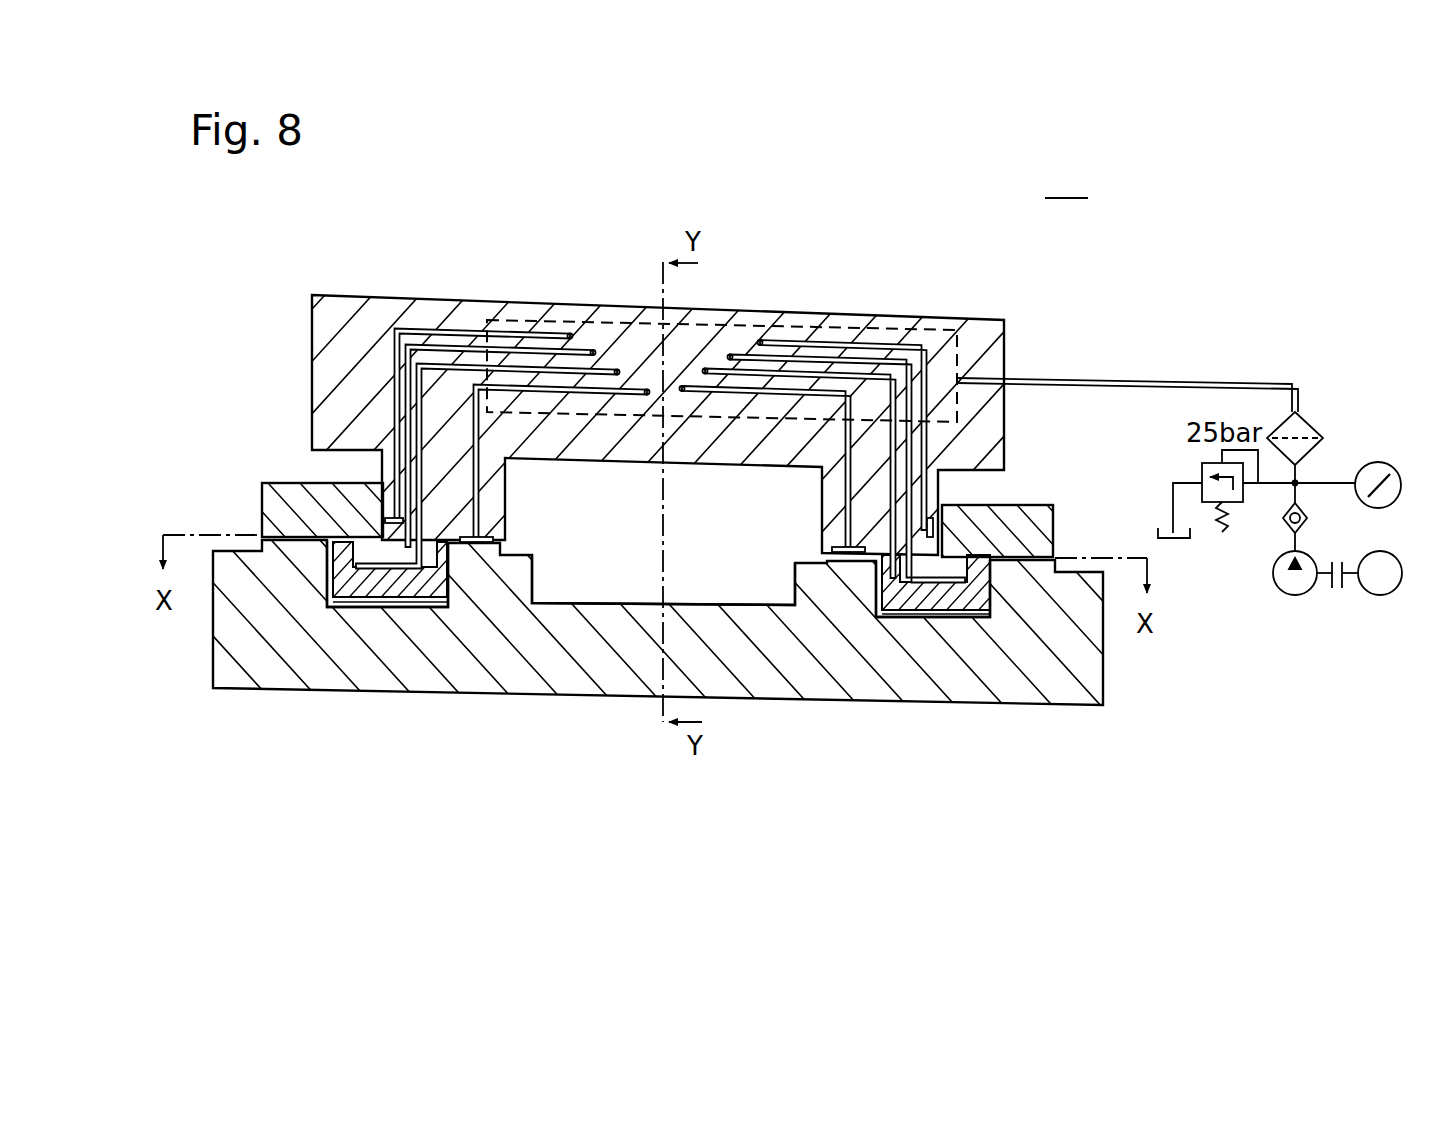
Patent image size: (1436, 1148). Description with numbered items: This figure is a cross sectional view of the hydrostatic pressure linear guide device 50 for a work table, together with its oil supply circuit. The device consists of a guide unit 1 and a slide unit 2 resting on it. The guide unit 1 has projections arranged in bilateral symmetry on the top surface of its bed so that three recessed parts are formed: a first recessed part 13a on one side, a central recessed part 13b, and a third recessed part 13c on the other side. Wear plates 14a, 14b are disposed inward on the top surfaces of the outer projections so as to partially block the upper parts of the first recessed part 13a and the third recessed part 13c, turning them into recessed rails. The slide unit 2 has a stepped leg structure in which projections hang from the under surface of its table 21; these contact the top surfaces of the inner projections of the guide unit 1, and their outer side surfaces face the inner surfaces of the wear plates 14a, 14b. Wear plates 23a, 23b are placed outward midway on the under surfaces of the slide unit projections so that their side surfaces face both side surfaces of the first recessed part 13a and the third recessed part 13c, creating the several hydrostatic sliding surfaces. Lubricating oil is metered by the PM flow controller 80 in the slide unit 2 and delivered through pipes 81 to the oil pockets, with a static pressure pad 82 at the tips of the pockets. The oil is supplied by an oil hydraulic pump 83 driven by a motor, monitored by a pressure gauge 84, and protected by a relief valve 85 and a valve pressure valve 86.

The guide unit 1 is at (181, 682).
The slide unit 2 is at (270, 308).
The first recessed part 13a is at (943, 613).
The recessed part 13b is at (598, 588).
The third recessed part 13c is at (357, 600).
The wear plate 14a is at (1020, 503).
The wear plate 14b is at (290, 483).
The table 21 is at (871, 317).
The wear plate 23a is at (973, 603).
The wear plate 23b is at (410, 587).
The hydrostatic pressure linear guide device 50 is at (1066, 181).
The PM flow controller 80 is at (727, 345).
The pipes 81 is at (447, 304).
The static pressure pad 82 is at (858, 583).
The oil hydraulic pump 83 is at (1312, 551).
The pressure gauge 84 is at (1378, 462).
The relief valve 85 is at (1240, 503).
The valve pressure valve 86 is at (1312, 421).